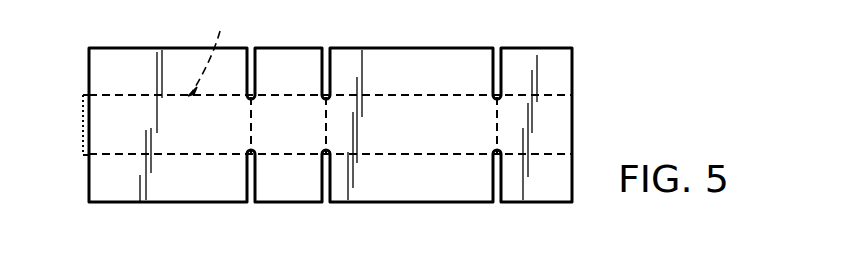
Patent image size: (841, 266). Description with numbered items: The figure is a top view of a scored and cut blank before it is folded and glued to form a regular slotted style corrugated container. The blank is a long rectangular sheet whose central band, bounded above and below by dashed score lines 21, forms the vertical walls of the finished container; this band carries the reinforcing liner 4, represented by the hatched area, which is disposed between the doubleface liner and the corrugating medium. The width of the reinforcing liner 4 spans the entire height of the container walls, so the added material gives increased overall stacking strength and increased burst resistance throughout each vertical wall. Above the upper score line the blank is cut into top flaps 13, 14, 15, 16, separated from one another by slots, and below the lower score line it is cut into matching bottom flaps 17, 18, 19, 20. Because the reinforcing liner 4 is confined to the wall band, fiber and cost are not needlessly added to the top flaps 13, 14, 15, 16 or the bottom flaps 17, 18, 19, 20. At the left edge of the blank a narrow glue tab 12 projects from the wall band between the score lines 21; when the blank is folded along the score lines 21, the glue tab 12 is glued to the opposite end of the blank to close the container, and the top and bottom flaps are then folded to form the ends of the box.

The reinforcing liner 4 is at (553, 124).
The glue tab 12 is at (81, 113).
The top flap 13 is at (152, 62).
The top flap 14 is at (293, 58).
The top flap 15 is at (403, 58).
The top flap 16 is at (535, 58).
The bottom flap 17 is at (182, 182).
The bottom flap 18 is at (290, 182).
The bottom flap 19 is at (418, 180).
The bottom flap 20 is at (542, 182).
The score lines 21 is at (210, 52).